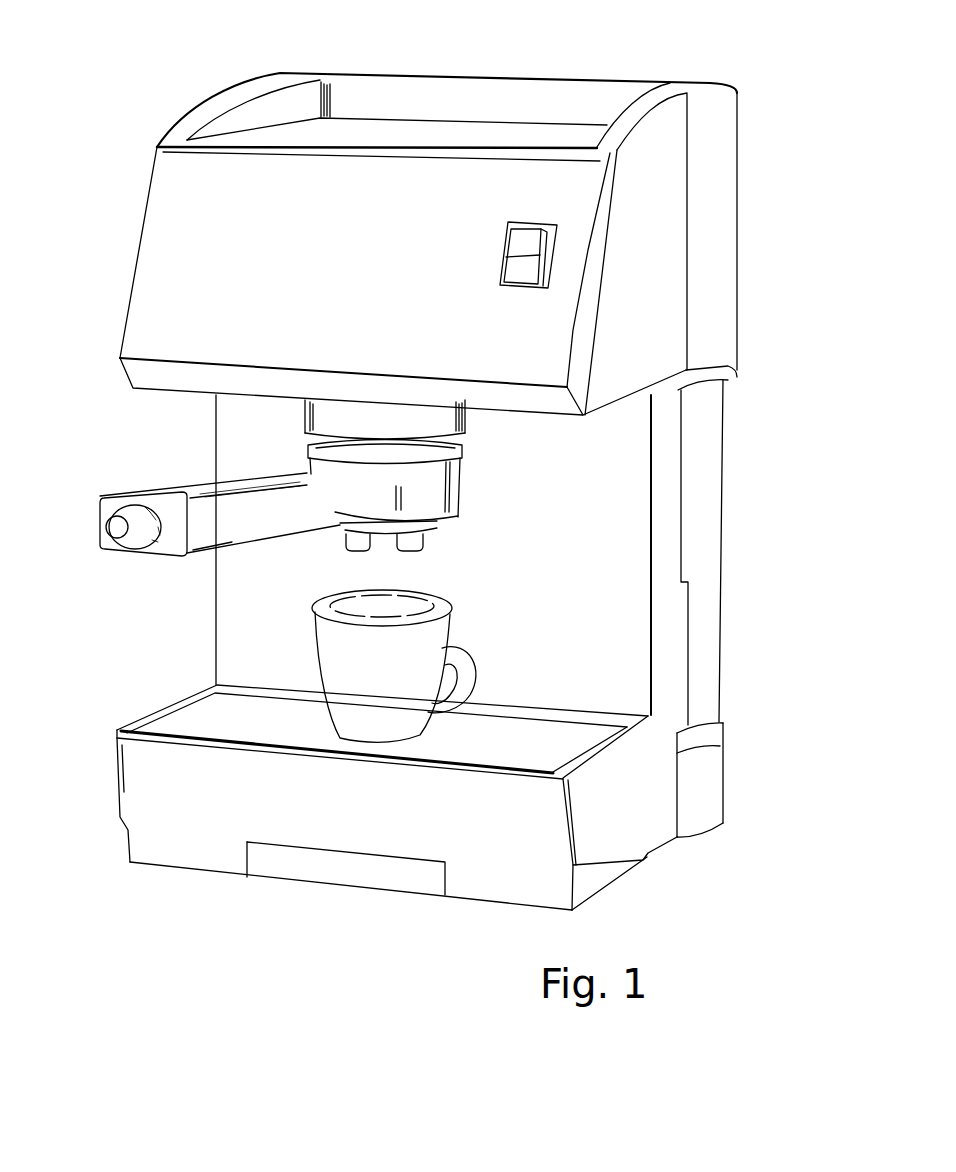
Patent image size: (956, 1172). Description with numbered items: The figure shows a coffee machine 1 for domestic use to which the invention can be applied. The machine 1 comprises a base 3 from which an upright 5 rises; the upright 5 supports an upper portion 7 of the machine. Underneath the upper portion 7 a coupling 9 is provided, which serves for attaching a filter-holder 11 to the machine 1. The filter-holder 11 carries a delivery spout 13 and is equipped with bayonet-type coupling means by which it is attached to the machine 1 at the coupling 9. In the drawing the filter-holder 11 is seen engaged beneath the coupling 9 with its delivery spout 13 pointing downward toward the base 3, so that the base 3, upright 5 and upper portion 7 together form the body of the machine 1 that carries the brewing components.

The coffee machine 1 is at (780, 388).
The base 3 is at (613, 822).
The upright 5 is at (705, 562).
The upper portion 7 is at (273, 133).
The coupling 9 is at (420, 426).
The filter-holder 11 is at (97, 536).
The delivery spout 13 is at (425, 545).